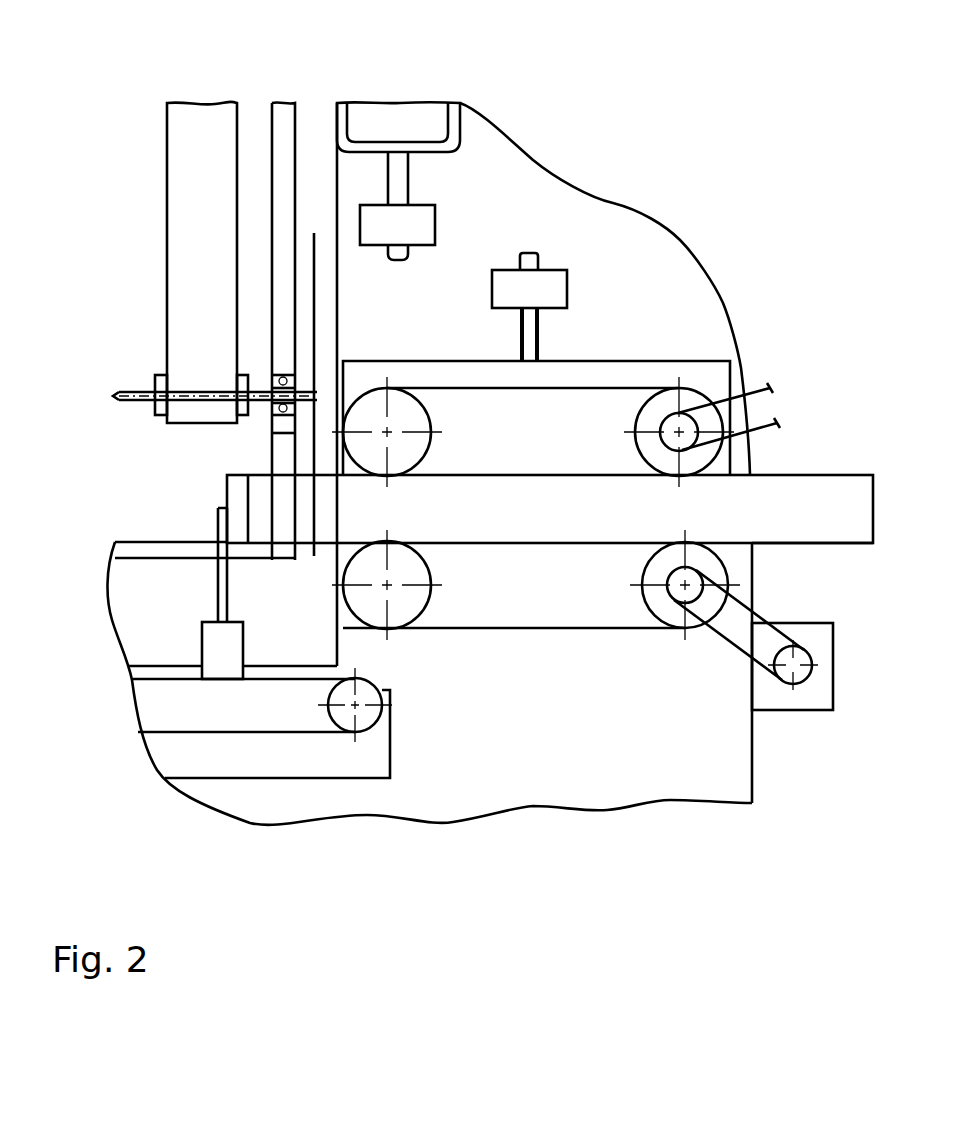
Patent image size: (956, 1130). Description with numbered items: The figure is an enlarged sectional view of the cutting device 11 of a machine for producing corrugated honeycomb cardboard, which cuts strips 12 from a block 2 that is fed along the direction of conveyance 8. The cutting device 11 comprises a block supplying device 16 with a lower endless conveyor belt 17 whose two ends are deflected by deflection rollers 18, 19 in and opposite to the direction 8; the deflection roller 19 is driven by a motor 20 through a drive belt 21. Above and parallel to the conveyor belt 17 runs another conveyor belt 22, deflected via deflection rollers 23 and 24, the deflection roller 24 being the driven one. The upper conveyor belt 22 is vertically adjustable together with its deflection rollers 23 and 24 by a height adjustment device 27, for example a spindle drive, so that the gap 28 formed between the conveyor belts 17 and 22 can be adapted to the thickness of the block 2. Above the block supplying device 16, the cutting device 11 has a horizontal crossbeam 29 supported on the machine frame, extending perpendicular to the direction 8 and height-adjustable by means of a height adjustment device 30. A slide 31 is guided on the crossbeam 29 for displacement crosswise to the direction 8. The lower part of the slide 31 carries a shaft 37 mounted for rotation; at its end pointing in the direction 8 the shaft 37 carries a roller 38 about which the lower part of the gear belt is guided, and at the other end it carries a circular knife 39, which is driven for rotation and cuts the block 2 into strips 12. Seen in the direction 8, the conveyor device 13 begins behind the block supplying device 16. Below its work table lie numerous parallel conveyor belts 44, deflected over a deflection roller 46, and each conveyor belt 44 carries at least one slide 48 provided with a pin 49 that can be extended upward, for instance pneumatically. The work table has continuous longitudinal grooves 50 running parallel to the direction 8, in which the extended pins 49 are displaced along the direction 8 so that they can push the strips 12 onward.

The block 2 is at (783, 483).
The direction of conveyance 8 is at (540, 837).
The cutting device 11 is at (398, 80).
The strips 12 is at (257, 503).
The conveyor device 13 is at (186, 695).
The block supplying device 16 is at (633, 356).
The lower endless conveyor belt 17 is at (502, 632).
The deflection roller 18 is at (395, 613).
The deflection roller 19 is at (672, 617).
The motor 20 is at (773, 702).
The drive belt 21 is at (710, 632).
The upper conveyor belt 22 is at (560, 388).
The deflection roller 23 is at (345, 437).
The deflection roller 24 is at (713, 425).
The height adjustment device 27 is at (531, 261).
The gap 28 is at (752, 545).
The horizontal crossbeam 29 is at (452, 123).
The height adjustment device 30 is at (418, 222).
The slide 31 is at (158, 185).
The shaft 37 is at (260, 387).
The roller 38 is at (157, 408).
The circular knife 39 is at (310, 280).
The conveyor belts 44 is at (128, 622).
The deflection roller 46 is at (357, 740).
The slide 48 is at (210, 640).
The pin 49 is at (218, 585).
The longitudinal grooves 50 is at (122, 548).